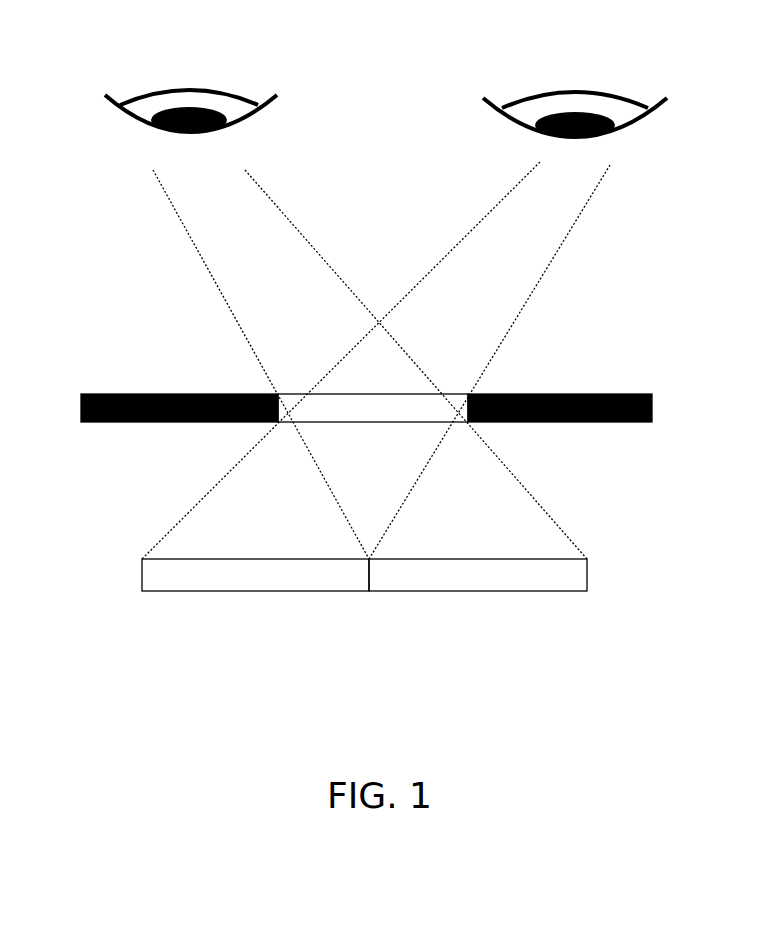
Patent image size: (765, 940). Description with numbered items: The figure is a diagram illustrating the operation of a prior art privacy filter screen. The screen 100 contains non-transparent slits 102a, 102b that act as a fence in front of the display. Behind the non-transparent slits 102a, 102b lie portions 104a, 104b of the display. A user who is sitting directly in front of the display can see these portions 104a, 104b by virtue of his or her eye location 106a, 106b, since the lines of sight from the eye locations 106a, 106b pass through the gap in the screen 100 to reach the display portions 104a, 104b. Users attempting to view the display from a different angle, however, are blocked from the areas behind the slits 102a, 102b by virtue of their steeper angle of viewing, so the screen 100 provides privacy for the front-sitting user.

The screen 100 is at (359, 385).
The non-transparent slit 102a is at (156, 453).
The non-transparent slit 102b is at (575, 448).
The display portion 104a is at (255, 596).
The display portion 104b is at (478, 604).
The eye location 106a is at (575, 70).
The eye location 106b is at (170, 70).